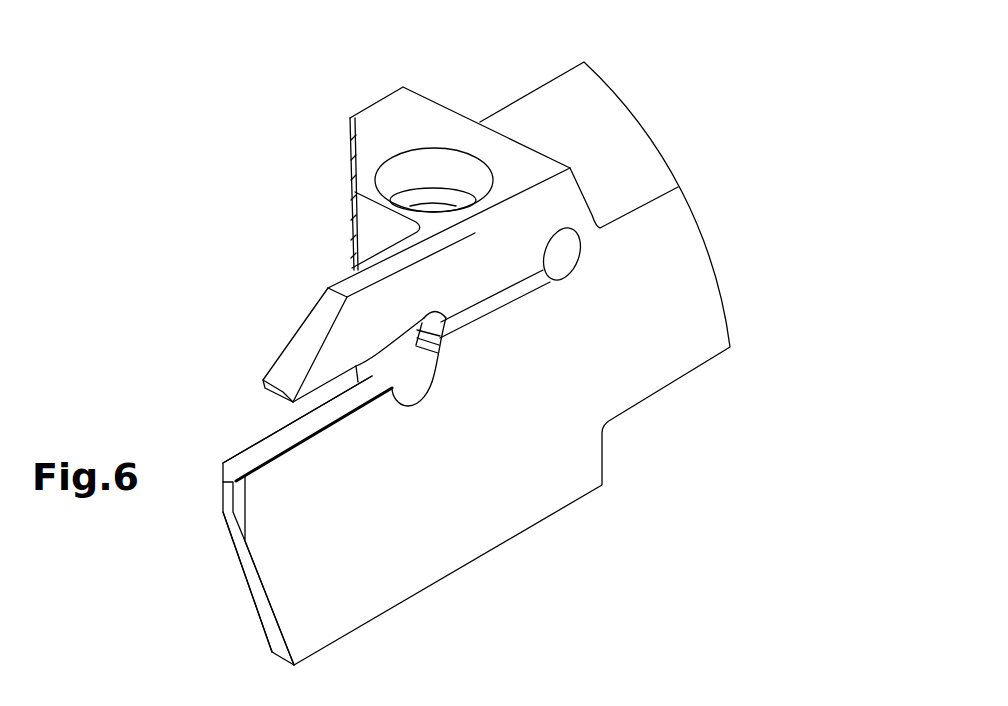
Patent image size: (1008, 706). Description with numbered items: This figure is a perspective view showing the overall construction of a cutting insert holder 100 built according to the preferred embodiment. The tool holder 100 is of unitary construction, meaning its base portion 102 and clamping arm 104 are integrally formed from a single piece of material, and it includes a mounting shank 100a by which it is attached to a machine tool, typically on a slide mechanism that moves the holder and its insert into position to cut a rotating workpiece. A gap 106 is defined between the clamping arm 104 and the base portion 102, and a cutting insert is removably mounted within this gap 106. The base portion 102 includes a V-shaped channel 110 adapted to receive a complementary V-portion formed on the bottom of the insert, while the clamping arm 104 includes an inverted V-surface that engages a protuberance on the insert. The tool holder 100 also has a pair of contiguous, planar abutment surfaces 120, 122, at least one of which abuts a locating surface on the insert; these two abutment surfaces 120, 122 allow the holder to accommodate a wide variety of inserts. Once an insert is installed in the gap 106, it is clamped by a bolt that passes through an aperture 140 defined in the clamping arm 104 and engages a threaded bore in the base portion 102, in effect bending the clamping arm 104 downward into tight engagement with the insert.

The cutting insert holder 100 is at (586, 526).
The mounting shank 100a is at (643, 162).
The base portion 102 is at (358, 544).
The clamping arm 104 is at (400, 329).
The gap 106 is at (273, 414).
The V-shaped channel 110 is at (290, 437).
The planar abutment surface 120 is at (433, 362).
The planar abutment surface 122 is at (436, 352).
The aperture 140 is at (430, 168).